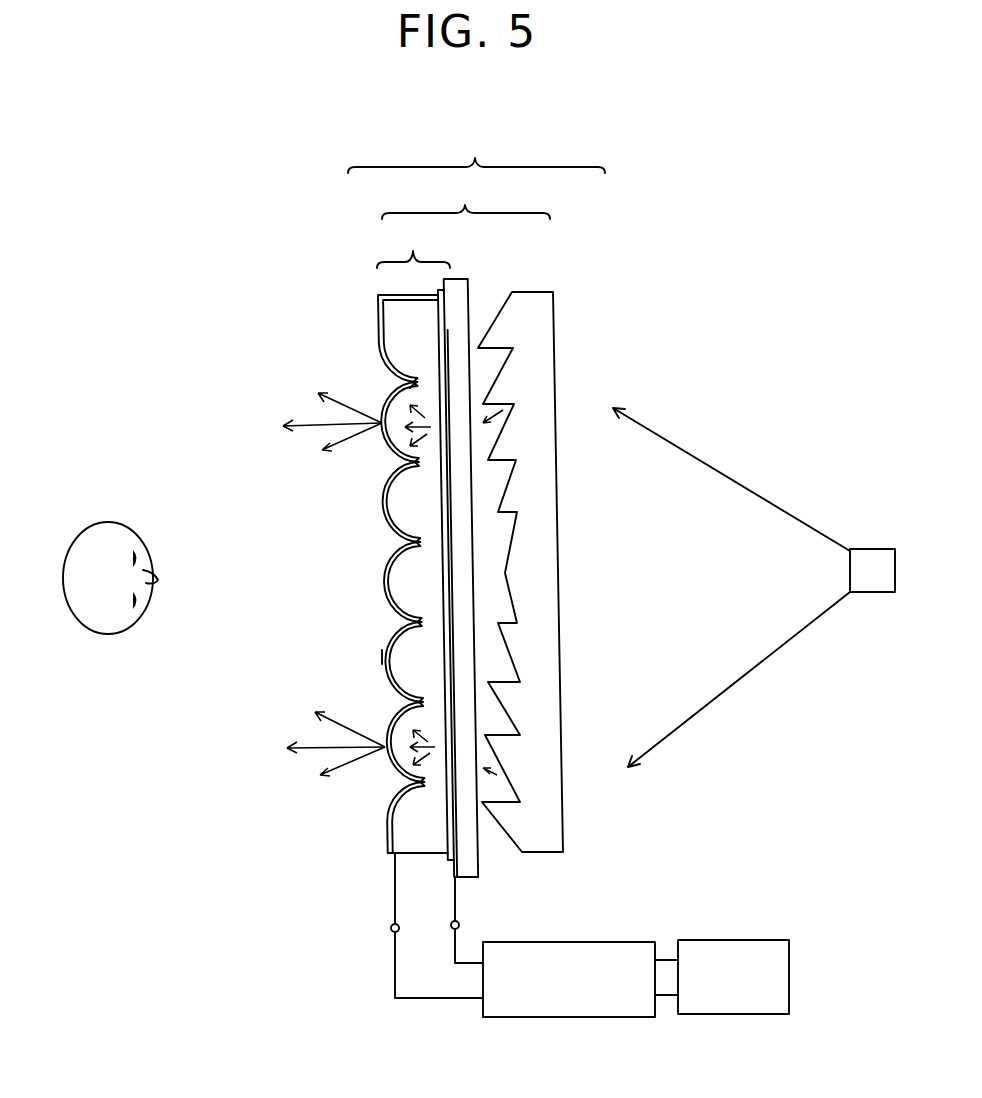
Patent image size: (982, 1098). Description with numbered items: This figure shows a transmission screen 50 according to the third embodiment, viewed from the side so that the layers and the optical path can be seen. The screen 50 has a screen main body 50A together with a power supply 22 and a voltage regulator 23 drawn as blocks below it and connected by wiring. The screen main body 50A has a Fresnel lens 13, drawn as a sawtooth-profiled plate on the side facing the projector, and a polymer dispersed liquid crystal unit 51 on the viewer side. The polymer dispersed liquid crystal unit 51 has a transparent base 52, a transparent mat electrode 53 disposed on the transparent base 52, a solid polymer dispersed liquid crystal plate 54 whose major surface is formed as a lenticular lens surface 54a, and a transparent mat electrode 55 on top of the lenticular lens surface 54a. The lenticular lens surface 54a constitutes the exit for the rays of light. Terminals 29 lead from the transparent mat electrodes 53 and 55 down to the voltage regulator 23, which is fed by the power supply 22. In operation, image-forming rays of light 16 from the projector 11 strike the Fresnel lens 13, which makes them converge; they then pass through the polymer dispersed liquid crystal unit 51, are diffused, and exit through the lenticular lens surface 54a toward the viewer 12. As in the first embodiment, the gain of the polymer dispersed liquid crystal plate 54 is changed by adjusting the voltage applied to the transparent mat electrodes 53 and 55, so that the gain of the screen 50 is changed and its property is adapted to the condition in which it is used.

The projector 11 is at (862, 593).
The viewer 12 is at (88, 634).
The Fresnel lens 13 is at (543, 292).
The rays of light 16 is at (728, 477).
The power supply 22 is at (713, 940).
The voltage regulator 23 is at (568, 942).
The terminals 29 is at (391, 928).
The transmission screen 50 is at (476, 147).
The screen main body 50A is at (466, 195).
The polymer dispersed liquid crystal unit 51 is at (413, 242).
The transparent base 52 is at (457, 380).
The transparent mat electrode 53 is at (446, 330).
The solid polymer dispersed liquid crystal plate 54 is at (390, 329).
The lenticular lens surface 54a is at (390, 398).
The transparent mat electrode 55 is at (382, 657).